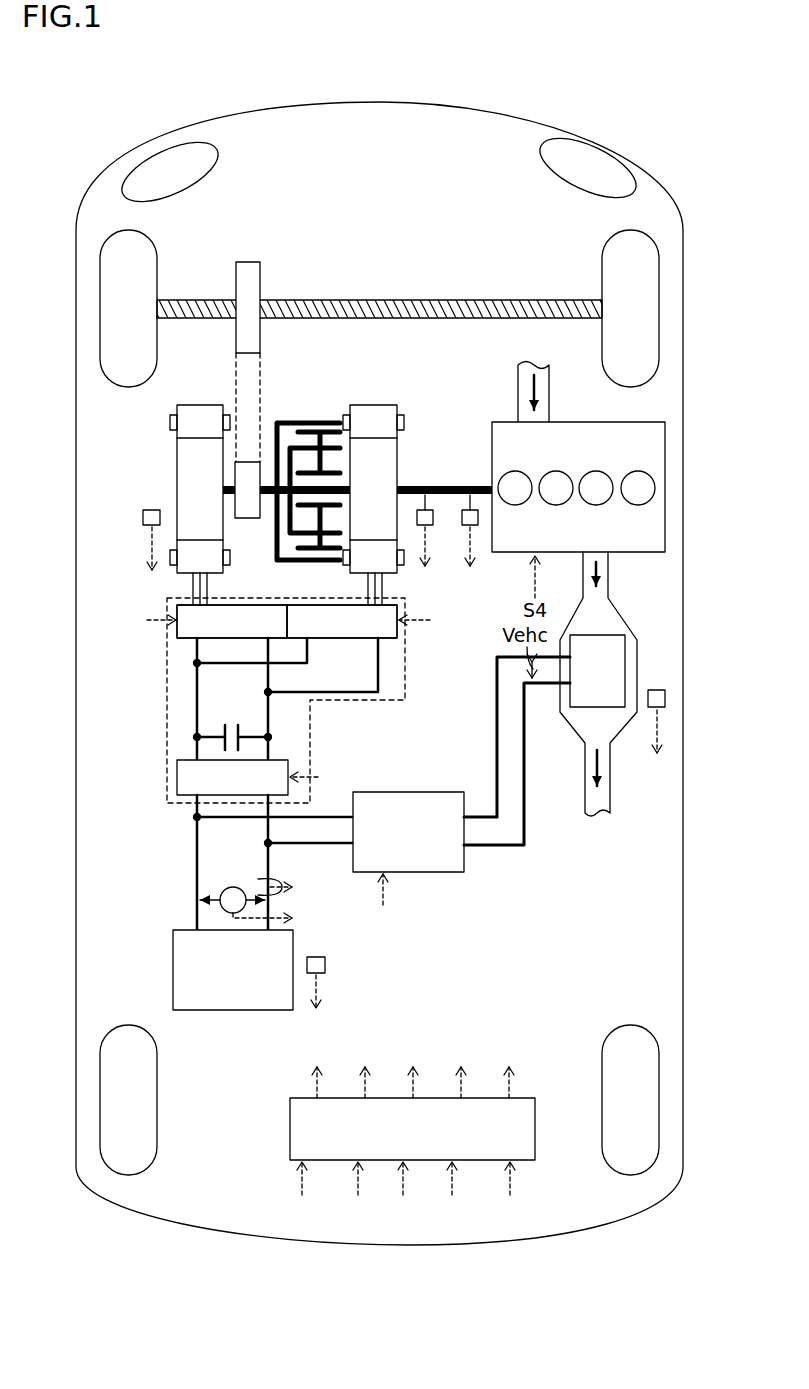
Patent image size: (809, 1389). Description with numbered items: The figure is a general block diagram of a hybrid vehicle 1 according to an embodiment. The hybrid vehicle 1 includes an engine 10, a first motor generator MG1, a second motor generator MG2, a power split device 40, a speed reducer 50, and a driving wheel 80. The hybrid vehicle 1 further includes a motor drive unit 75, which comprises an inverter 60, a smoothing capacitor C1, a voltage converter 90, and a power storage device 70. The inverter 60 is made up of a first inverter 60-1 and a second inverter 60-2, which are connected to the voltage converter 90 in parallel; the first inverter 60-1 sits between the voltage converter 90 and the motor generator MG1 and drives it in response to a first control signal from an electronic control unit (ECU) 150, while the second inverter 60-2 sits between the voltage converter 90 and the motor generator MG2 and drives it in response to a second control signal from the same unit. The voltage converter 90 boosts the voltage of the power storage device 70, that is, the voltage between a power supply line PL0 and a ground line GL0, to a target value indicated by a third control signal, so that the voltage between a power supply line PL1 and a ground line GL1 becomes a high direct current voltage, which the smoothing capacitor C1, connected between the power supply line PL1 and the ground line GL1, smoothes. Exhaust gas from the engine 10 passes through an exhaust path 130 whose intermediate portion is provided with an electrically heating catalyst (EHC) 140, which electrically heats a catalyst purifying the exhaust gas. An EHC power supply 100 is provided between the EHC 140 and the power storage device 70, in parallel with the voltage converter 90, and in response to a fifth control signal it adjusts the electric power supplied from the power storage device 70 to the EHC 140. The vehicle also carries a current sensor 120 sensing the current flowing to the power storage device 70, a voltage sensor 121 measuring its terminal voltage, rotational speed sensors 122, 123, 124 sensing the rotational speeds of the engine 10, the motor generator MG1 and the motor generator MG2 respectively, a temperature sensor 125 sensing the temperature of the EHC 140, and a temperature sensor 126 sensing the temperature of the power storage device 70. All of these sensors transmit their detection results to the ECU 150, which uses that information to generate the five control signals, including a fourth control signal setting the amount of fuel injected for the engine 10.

The hybrid vehicle 1 is at (113, 60).
The engine 10 is at (665, 530).
The power split device 40 is at (310, 423).
The speed reducer 50 is at (249, 258).
The inverter 60 is at (288, 621).
The inverter 60-1 is at (303, 605).
The inverter 60-2 is at (226, 605).
The power storage device 70 is at (173, 940).
The motor drive unit 75 is at (405, 677).
The driving wheel 80 is at (659, 315).
The voltage converter 90 is at (177, 770).
The EHC power supply 100 is at (418, 792).
The current sensor 120 is at (258, 882).
The voltage sensor 121 is at (228, 888).
The rotational speed sensor 122 is at (469, 485).
The rotational speed sensor 123 is at (424, 485).
The rotational speed sensor 124 is at (150, 510).
The temperature sensor 125 is at (665, 698).
The temperature sensor 126 is at (325, 963).
The exhaust path 130 is at (609, 570).
The electrically heating catalyst (EHC) 140 is at (637, 650).
The electronic control unit (ECU) 150 is at (290, 1130).
The motor generator MG1 is at (375, 405).
The motor generator MG2 is at (203, 405).
The smoothing capacitor C1 is at (233, 720).
The power supply line PL1 is at (197, 690).
The ground line GL1 is at (268, 712).
The power supply line PL0 is at (197, 862).
The ground line GL0 is at (268, 858).